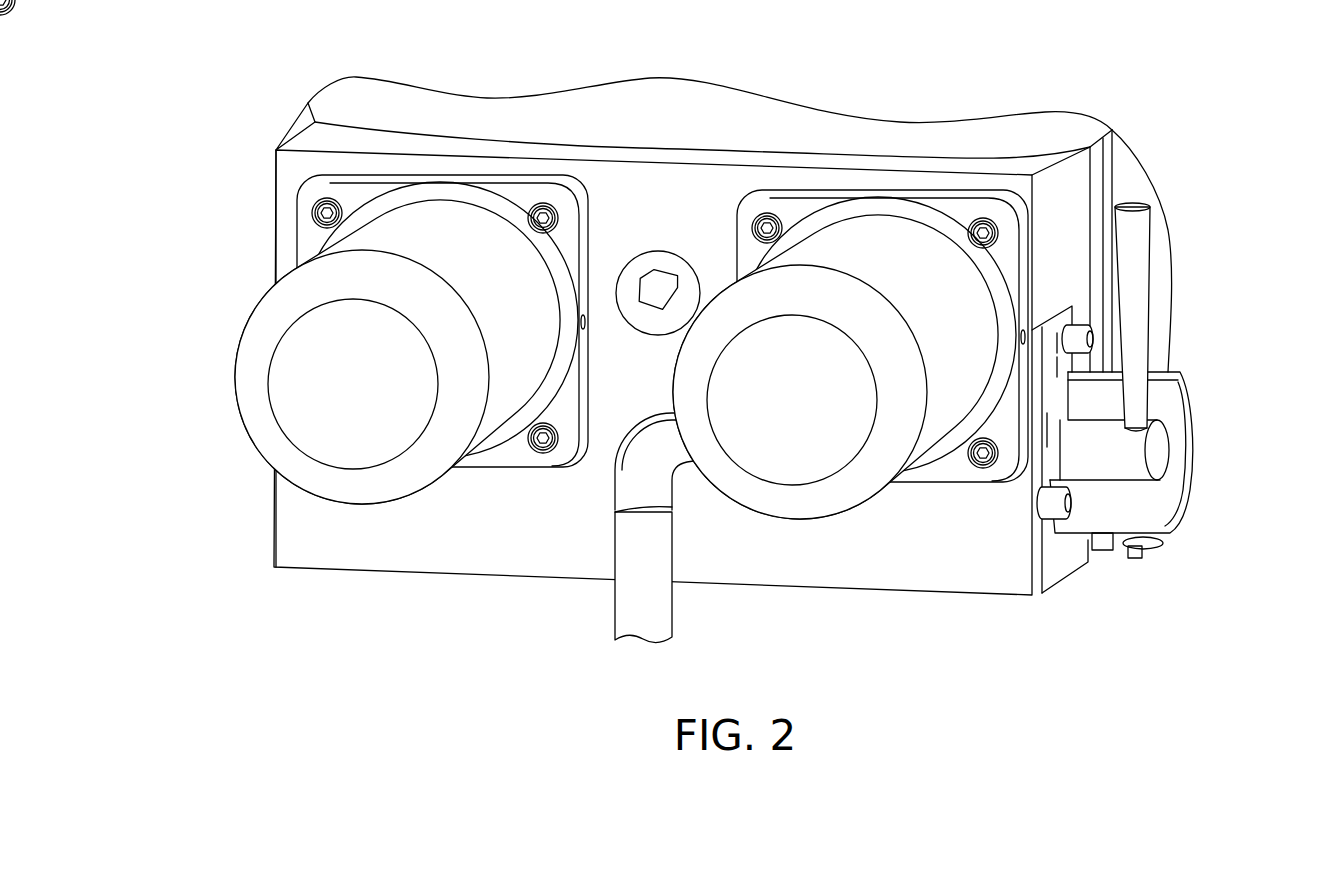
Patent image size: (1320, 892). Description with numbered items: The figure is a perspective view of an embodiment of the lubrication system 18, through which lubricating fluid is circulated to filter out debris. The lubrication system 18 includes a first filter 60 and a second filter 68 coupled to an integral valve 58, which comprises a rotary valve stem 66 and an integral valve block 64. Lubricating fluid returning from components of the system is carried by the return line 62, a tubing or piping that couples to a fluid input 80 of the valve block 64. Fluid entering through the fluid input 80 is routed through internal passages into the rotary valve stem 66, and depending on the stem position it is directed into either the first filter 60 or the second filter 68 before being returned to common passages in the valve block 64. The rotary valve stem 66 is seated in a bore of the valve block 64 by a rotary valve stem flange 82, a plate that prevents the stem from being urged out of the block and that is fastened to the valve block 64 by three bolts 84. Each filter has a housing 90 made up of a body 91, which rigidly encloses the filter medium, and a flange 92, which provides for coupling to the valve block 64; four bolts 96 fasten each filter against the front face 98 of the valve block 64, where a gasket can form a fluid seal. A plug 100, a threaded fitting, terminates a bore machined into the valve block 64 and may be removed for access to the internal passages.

The lubrication system 18 is at (1166, 80).
The integral valve 58 is at (1030, 82).
The first filter 60 is at (288, 378).
The return line 62 is at (657, 612).
The integral valve block 64 is at (276, 168).
The rotary valve stem 66 is at (1172, 441).
The second filter 68 is at (808, 472).
The fluid input 80 is at (688, 487).
The rotary valve stem flange 82 is at (1078, 553).
The bolts 84 is at (1080, 313).
The housing 90 is at (420, 259).
The body 91 is at (490, 425).
The flange 92 is at (310, 235).
The bolts 96 is at (323, 200).
The front face 98 is at (667, 188).
The plug 100 is at (677, 273).